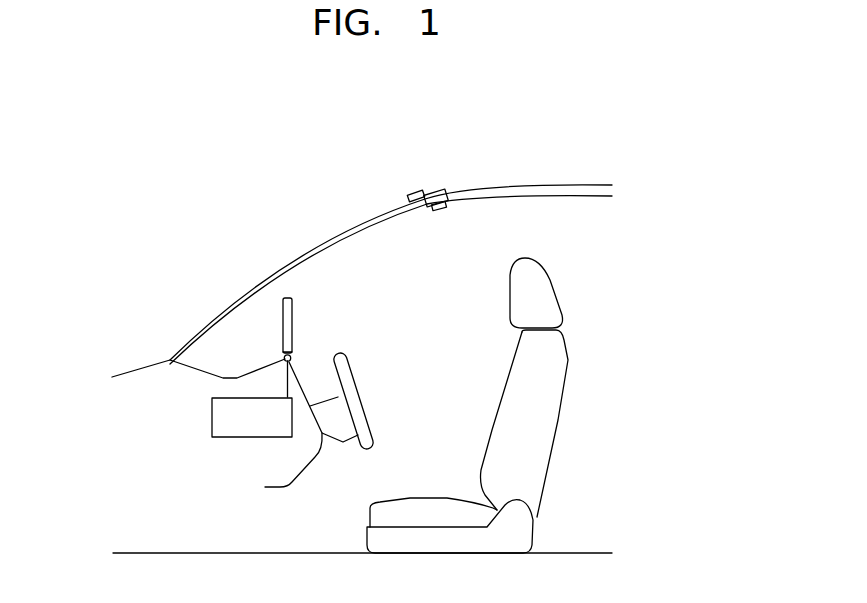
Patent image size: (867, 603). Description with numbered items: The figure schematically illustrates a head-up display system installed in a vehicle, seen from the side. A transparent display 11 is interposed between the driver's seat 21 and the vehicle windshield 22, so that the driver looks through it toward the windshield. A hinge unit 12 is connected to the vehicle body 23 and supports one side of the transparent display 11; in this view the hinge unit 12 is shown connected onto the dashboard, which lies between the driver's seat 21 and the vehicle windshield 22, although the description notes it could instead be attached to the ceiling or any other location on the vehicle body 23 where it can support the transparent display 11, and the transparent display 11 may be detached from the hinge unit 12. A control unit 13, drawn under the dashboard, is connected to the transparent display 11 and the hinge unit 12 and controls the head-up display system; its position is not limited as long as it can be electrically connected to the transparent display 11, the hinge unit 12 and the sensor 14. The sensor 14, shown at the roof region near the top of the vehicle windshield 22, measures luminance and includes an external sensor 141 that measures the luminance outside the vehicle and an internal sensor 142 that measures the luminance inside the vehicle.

The transparent display 11 is at (292, 318).
The hinge unit 12 is at (291, 357).
The control unit 13 is at (243, 437).
The sensor 14 is at (426, 154).
The external sensor 141 is at (414, 192).
The internal sensor 142 is at (443, 192).
The driver's seat 21 is at (562, 410).
The vehicle windshield 22 is at (293, 265).
The vehicle body 23 is at (195, 368).